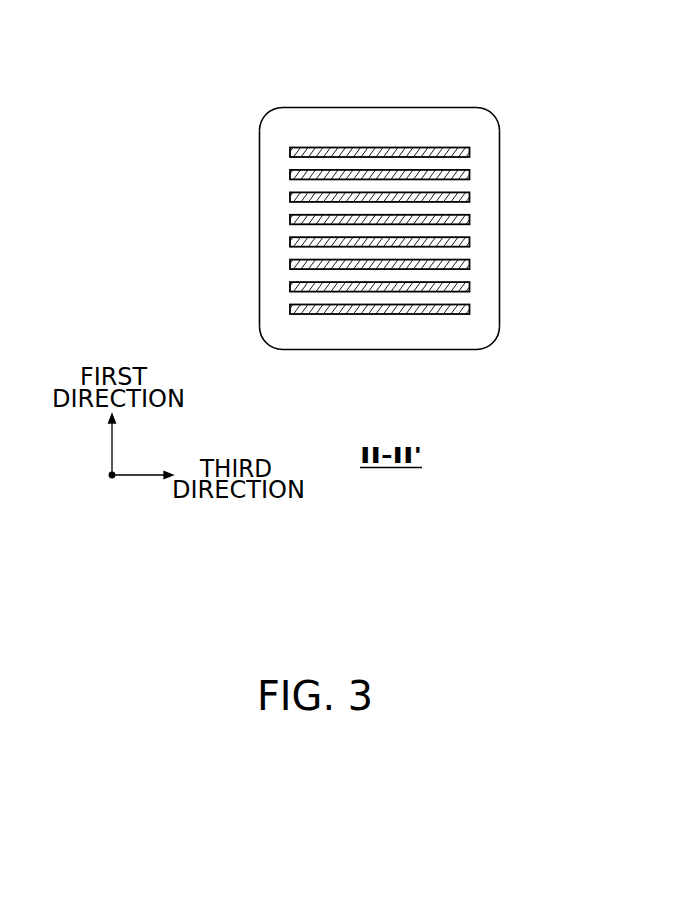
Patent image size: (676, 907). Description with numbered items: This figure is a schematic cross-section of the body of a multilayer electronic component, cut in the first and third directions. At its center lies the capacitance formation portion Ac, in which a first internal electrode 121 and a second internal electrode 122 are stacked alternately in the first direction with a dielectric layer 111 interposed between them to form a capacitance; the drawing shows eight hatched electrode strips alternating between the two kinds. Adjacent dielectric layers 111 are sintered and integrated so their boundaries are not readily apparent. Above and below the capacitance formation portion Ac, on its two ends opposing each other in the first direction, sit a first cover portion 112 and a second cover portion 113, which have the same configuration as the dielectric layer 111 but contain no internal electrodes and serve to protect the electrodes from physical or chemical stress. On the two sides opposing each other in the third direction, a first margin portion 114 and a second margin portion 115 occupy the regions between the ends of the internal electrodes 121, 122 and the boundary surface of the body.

The dielectric layer 111 is at (463, 163).
The first cover portion 112 is at (323, 108).
The second cover portion 113 is at (377, 344).
The first margin portion 114 is at (268, 257).
The second margin portion 115 is at (498, 258).
The first internal electrode 121 is at (470, 148).
The second internal electrode 122 is at (470, 172).
The capacitance formation portion Ac is at (376, 214).